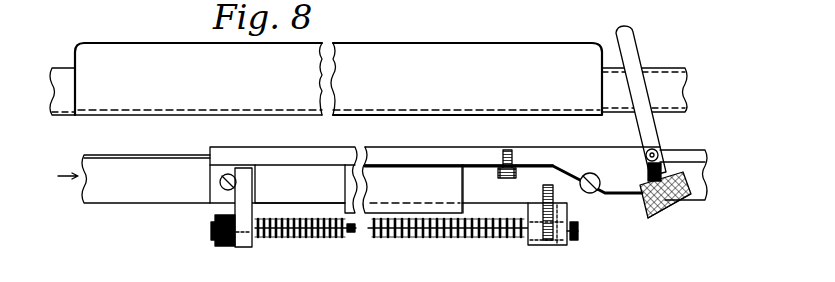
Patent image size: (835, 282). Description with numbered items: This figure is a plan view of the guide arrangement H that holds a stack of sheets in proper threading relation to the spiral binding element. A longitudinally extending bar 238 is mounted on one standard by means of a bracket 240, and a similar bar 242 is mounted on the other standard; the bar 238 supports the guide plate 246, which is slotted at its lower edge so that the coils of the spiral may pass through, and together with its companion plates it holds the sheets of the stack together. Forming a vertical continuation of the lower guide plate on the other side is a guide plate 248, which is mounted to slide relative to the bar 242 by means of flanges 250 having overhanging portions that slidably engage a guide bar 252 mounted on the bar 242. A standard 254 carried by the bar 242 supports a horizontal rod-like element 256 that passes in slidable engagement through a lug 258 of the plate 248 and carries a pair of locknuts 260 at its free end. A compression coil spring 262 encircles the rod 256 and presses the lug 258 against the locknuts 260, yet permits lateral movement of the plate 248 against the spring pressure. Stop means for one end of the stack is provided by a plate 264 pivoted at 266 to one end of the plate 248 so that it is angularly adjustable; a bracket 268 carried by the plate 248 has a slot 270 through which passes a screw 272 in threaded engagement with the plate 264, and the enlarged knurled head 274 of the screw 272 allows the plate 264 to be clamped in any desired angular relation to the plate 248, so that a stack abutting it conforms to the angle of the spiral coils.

The longitudinally extending bar 238 is at (662, 78).
The bracket 240 is at (62, 91).
The bar 242 is at (125, 192).
The guide plate 246 is at (532, 62).
The guide plate 248 is at (275, 153).
The flanges 250 is at (410, 185).
The guide bar 252 is at (300, 183).
The standard 254 is at (560, 244).
The rod-like element 256 is at (345, 235).
The lug 258 is at (240, 200).
The locknuts 260 is at (215, 238).
The compression coil spring 262 is at (373, 235).
The plate 264 is at (645, 130).
The pivot 266 is at (660, 153).
The bracket 268 is at (613, 194).
The slot 270 is at (645, 190).
The screw 272 is at (700, 176).
The knurled head 274 is at (684, 208).
The arrangement H is at (58, 176).